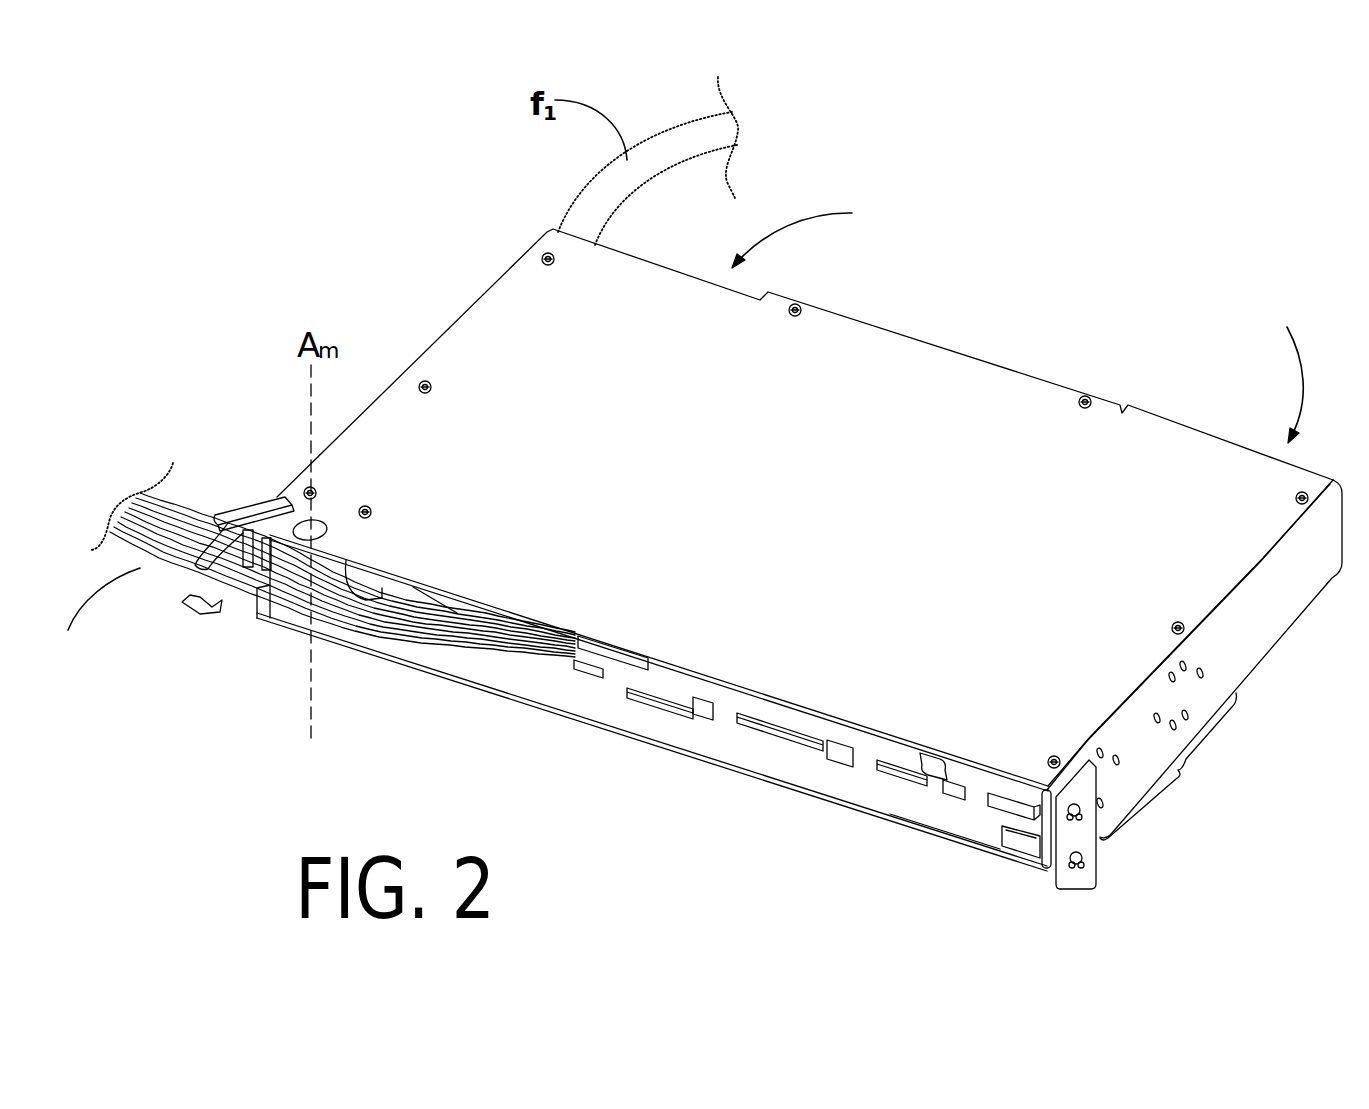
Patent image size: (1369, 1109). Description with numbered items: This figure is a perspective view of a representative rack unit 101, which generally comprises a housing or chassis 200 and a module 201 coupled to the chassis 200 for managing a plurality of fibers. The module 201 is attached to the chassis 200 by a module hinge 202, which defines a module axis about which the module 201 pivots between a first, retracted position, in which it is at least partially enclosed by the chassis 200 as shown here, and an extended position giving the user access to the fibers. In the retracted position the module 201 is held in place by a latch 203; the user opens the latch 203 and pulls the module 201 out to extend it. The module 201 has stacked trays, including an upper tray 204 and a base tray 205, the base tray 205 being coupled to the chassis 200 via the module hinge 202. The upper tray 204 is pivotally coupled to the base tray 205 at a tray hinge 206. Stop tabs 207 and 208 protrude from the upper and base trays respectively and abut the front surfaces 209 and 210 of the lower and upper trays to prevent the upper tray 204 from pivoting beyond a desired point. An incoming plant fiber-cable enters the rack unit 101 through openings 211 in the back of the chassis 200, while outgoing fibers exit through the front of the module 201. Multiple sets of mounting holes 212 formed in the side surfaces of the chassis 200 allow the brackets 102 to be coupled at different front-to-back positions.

The rack unit 101 is at (385, 272).
The brackets 102 is at (220, 518).
The chassis 200 is at (486, 292).
The module 201 is at (535, 713).
The module hinge 202 is at (290, 527).
The latch 203 is at (1045, 870).
The upper tray 204 is at (643, 668).
The base tray 205 is at (665, 727).
The tray hinge 206 is at (767, 727).
The stop tab 207 is at (937, 753).
The stop tab 208 is at (1023, 797).
The front surface 209 is at (925, 808).
The front surface 210 is at (1018, 847).
The openings 211 is at (1017, 318).
The mounting holes 212 is at (1170, 750).